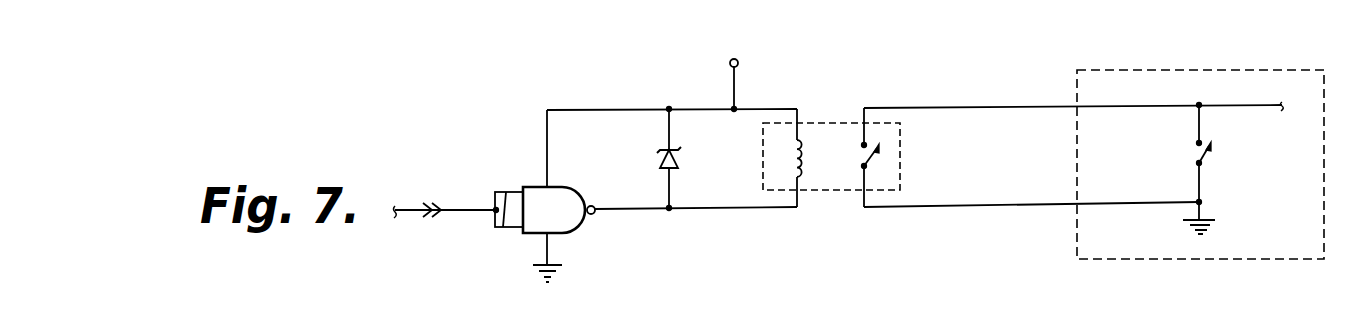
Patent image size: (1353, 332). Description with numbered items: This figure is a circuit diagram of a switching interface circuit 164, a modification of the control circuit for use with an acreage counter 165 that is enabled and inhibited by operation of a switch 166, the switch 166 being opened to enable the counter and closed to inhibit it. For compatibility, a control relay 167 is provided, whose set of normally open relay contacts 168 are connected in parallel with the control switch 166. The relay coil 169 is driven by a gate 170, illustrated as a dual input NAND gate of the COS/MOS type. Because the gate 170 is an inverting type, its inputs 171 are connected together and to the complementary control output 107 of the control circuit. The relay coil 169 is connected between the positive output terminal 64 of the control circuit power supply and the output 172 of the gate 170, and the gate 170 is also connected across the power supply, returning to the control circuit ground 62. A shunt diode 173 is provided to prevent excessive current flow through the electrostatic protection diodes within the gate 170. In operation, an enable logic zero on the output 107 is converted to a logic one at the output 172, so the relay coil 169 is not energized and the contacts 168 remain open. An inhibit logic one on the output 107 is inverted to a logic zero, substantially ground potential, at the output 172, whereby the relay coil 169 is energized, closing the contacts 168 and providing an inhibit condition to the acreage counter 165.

The complementary control output 107 is at (409, 209).
The inputs of the gate 171 is at (503, 227).
The gate 170 is at (561, 187).
The control circuit ground 62 is at (554, 265).
The output of the gate 172 is at (628, 210).
The switching interface circuit 164 is at (640, 82).
The positive output terminal 64 is at (730, 64).
The shunt diode 173 is at (680, 163).
The relay coil 169 is at (793, 170).
The control relay 167 is at (846, 96).
The normally open relay contacts 168 is at (863, 157).
The acreage counter 165 is at (1298, 48).
The switch 166 is at (1204, 153).